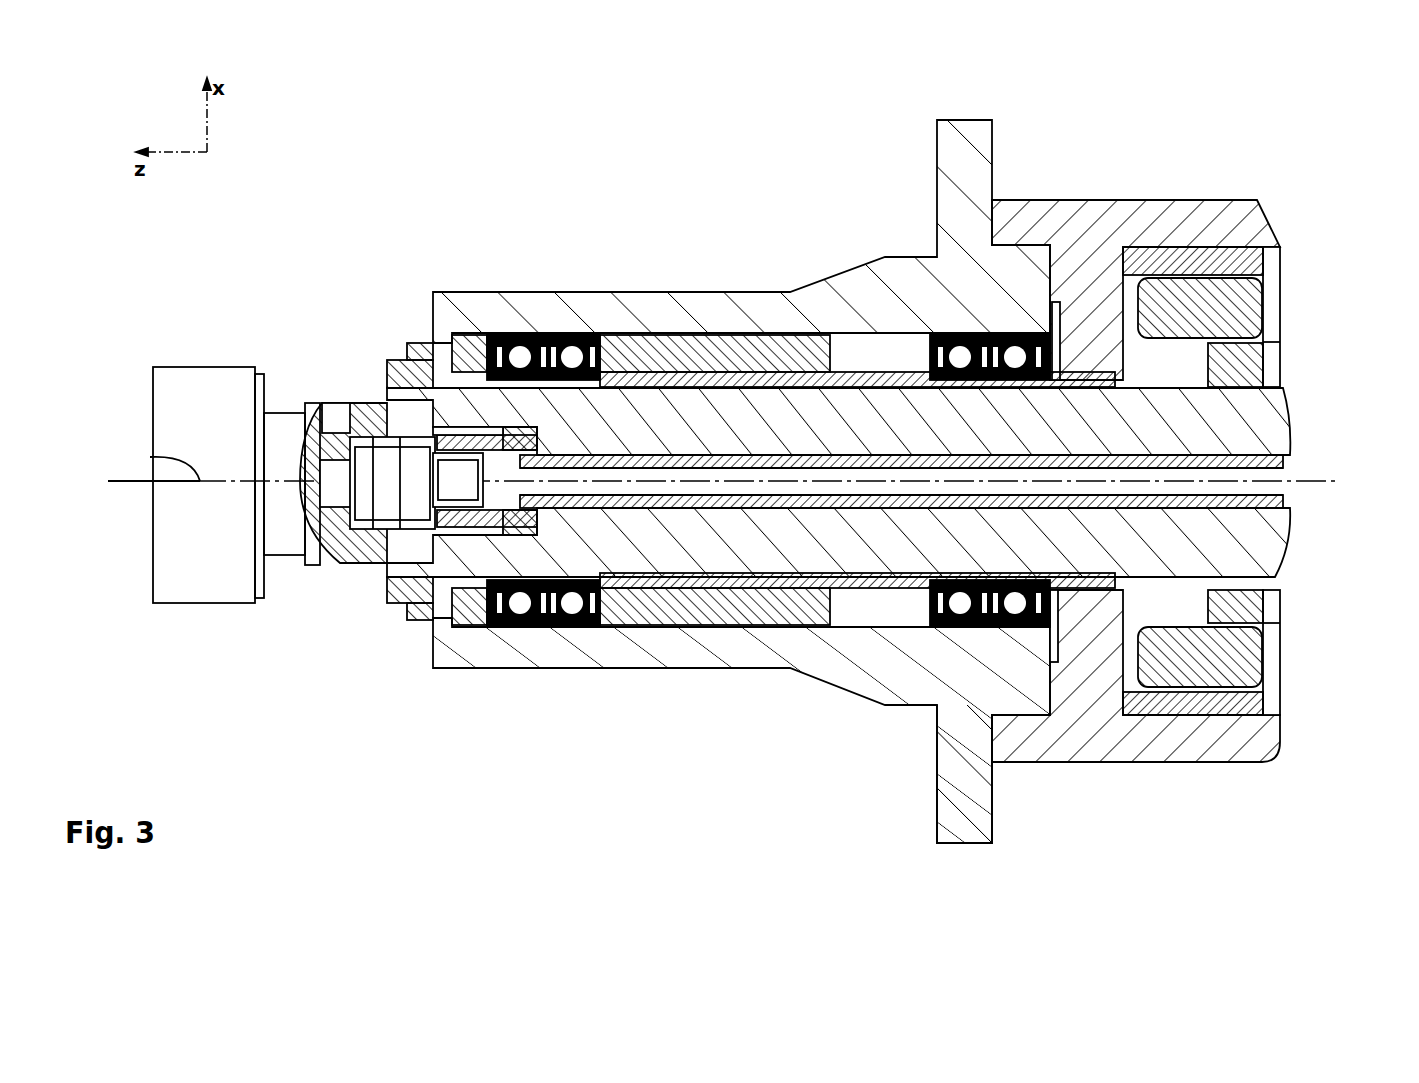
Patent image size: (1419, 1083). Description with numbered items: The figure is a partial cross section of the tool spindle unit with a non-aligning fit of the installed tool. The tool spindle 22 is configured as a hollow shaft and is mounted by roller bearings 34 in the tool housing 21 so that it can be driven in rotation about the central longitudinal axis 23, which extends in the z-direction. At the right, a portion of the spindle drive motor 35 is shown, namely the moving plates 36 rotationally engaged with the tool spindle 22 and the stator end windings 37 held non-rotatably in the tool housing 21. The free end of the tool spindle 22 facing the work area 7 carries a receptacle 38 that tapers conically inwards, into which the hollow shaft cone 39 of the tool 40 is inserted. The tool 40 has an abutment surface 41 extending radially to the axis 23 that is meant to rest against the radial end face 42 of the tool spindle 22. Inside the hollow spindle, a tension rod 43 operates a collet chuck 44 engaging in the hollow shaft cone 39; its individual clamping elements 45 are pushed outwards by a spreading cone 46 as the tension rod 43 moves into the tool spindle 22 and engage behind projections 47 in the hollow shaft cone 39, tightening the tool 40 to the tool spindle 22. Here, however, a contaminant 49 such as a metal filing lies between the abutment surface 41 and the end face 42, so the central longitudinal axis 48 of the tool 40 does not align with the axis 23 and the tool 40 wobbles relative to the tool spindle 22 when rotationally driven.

The work area 7 is at (150, 302).
The tool housing 21 is at (695, 660).
The tool spindle 22 is at (1275, 425).
The central longitudinal axis 23 is at (1280, 462).
The roller bearings 34 is at (568, 627).
The spindle drive motor 35 is at (1300, 336).
The moving plates 36 is at (1285, 365).
The stator end windings 37 is at (1267, 300).
The receptacle 38 is at (356, 565).
The hollow shaft cone 39 is at (334, 565).
The tool 40 is at (177, 528).
The abutment surface 41 is at (405, 440).
The end face 42 is at (345, 405).
The tension rod 43 is at (1280, 490).
The collet chuck 44 is at (520, 447).
The clamping elements 45 is at (462, 450).
The spreading cone 46 is at (395, 420).
The projections 47 is at (425, 432).
The central longitudinal axis of the tool 48 is at (150, 457).
The contaminant 49 is at (318, 400).